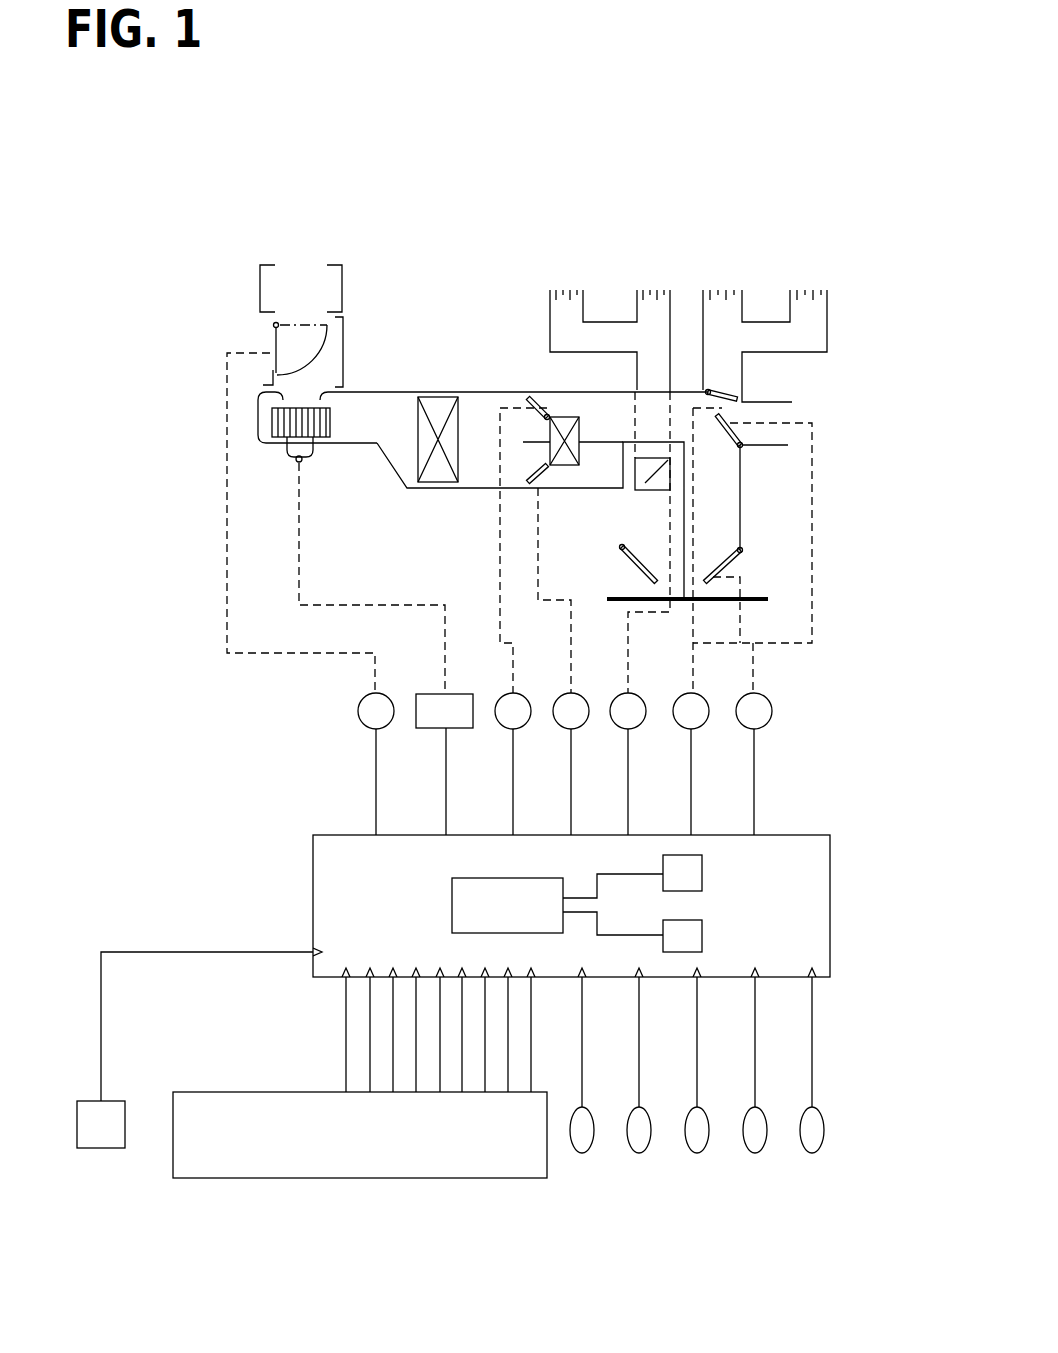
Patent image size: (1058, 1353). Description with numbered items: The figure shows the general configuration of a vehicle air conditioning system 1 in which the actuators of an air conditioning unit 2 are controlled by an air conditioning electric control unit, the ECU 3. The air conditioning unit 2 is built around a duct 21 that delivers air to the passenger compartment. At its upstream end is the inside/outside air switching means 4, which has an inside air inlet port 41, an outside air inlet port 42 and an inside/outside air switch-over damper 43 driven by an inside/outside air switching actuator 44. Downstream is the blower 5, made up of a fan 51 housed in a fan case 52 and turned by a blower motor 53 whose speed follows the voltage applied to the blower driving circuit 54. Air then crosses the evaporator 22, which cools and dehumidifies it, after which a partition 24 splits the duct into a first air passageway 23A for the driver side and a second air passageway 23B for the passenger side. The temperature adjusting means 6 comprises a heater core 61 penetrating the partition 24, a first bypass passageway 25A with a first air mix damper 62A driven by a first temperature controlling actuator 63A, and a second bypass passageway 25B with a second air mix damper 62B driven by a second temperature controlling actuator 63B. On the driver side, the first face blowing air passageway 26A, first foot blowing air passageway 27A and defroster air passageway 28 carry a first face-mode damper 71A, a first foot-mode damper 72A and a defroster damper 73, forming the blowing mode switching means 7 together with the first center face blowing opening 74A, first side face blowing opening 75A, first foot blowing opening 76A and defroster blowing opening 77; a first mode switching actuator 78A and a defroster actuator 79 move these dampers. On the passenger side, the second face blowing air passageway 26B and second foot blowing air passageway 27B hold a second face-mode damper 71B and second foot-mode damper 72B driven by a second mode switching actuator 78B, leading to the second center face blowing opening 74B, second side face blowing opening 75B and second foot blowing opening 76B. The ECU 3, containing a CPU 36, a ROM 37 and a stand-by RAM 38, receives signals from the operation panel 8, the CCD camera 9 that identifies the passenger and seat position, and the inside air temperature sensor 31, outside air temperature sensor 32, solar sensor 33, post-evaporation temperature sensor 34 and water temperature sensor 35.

The vehicle air conditioning system 1 is at (199, 213).
The air conditioning unit 2 is at (448, 320).
The air conditioning electric control unit (ECU) 3 is at (813, 823).
The inside/outside air switching means 4 is at (258, 297).
The blower 5 is at (270, 452).
The temperature adjusting means 6 is at (522, 472).
The blowing mode switching means 7 is at (833, 413).
The operation panel 8 is at (353, 1167).
The CCD camera 9 is at (97, 1133).
The duct 21 is at (462, 392).
The evaporator 22 is at (433, 478).
The first air passageway 23A is at (605, 410).
The second air passageway 23B is at (595, 480).
The partition 24 is at (685, 532).
The first bypass passageway 25A is at (543, 400).
The second bypass passageway 25B is at (620, 547).
The first face blowing air passageway 26A is at (738, 368).
The second face blowing air passageway 26B is at (665, 377).
The first foot blowing air passageway 27A is at (752, 593).
The second foot blowing air passageway 27B is at (617, 585).
The defroster air passageway 28 is at (762, 445).
The inside air temperature sensor 31 is at (812, 1153).
The outside air temperature sensor 32 is at (755, 1153).
The solar sensor 33 is at (697, 1153).
The post-evaporation temperature sensor 34 is at (639, 1153).
The water temperature sensor 35 is at (582, 1153).
The central processing unit (CPU) 36 is at (452, 902).
The ROM 37 is at (692, 872).
The stand-by RAM 38 is at (692, 935).
The inside air inlet port 41 is at (300, 278).
The outside air inlet port 42 is at (273, 323).
The inside/outside air switch-over damper 43 is at (275, 340).
The inside/outside air switching actuator 44 is at (365, 722).
The fan 51 is at (275, 422).
The fan case 52 is at (258, 403).
The blower motor 53 is at (293, 450).
The blower driving circuit 54 is at (428, 723).
The heater core 61 is at (567, 415).
The first air mix damper 62A is at (527, 397).
The second air mix damper 62B is at (528, 476).
The first temperature controlling actuator 63A is at (505, 718).
The second temperature controlling actuator 63B is at (565, 720).
The first face-mode damper 71A is at (722, 390).
The second face-mode damper 71B is at (668, 473).
The first foot-mode damper 72A is at (735, 562).
The second foot-mode damper 72B is at (643, 580).
The defroster damper 73 is at (723, 432).
The first center face blowing opening 74A is at (733, 290).
The second center face blowing opening 74B is at (652, 290).
The first side face blowing opening 75A is at (812, 290).
The second side face blowing opening 75B is at (565, 290).
The first foot blowing opening 76A is at (758, 583).
The second foot blowing opening 76B is at (612, 572).
The defroster blowing opening 77 is at (780, 437).
The first mode switching actuator 78A is at (680, 717).
The second mode switching actuator 78B is at (620, 718).
The defroster actuator 79 is at (748, 717).